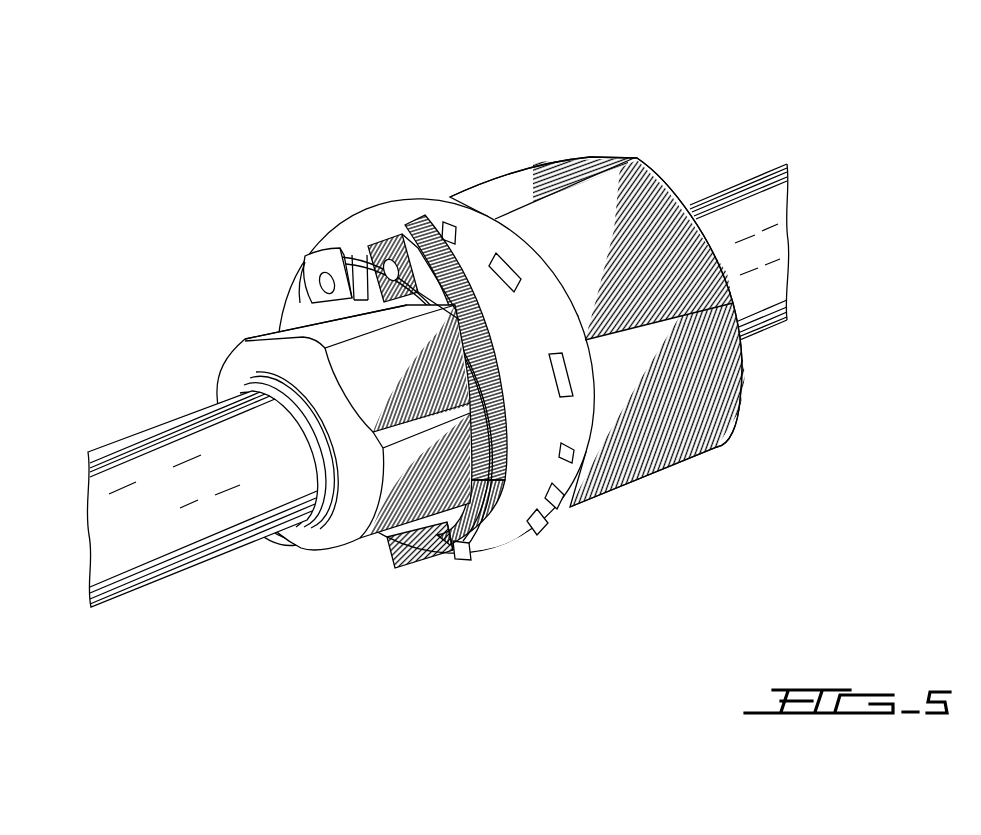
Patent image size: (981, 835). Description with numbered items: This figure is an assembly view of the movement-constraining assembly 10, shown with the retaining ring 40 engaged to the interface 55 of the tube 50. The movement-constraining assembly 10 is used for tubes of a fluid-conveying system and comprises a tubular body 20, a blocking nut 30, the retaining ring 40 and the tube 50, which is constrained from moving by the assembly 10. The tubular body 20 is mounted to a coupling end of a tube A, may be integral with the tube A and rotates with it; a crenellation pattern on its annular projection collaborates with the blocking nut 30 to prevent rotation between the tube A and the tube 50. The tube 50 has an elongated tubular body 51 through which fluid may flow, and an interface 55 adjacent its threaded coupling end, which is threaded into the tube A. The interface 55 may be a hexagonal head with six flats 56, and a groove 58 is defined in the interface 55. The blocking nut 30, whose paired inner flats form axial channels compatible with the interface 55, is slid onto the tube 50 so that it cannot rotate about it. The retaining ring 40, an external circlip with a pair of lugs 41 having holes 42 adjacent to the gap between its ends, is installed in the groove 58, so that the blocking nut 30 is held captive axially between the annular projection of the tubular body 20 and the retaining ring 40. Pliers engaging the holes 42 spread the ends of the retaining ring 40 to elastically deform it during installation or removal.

The movement-constraining assembly 10 is at (437, 358).
The tubular body 20 is at (567, 152).
The tube A is at (745, 192).
The blocking nut 30 is at (440, 426).
The groove 58 is at (445, 365).
The tube 50 is at (406, 522).
The interface 55 is at (344, 478).
The flats 56 is at (402, 378).
The elongated tubular body 51 is at (149, 560).
The retaining ring 40 is at (312, 273).
The lugs 41 is at (372, 298).
The holes 42 is at (322, 286).